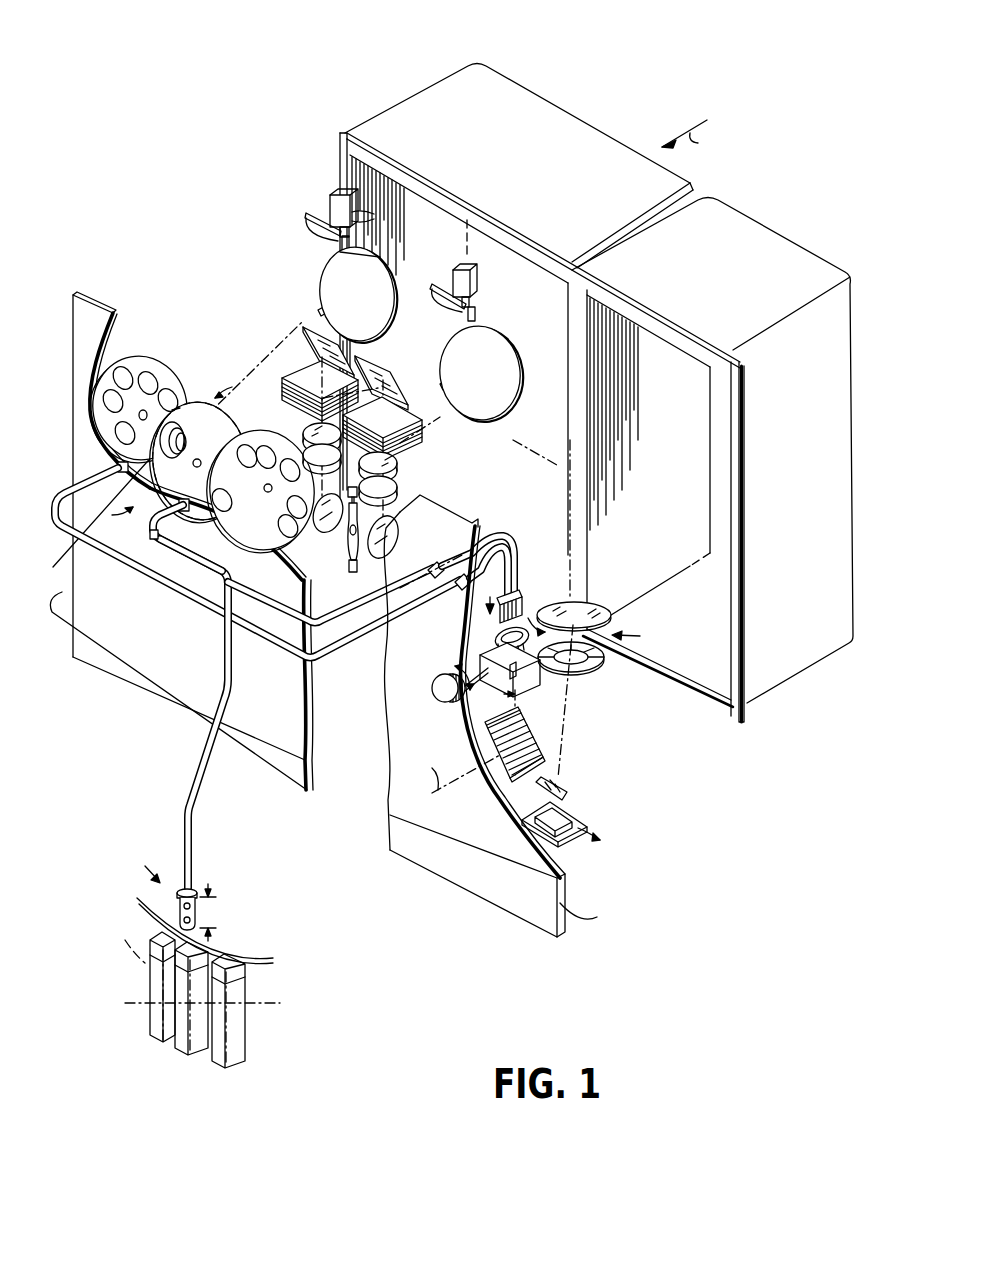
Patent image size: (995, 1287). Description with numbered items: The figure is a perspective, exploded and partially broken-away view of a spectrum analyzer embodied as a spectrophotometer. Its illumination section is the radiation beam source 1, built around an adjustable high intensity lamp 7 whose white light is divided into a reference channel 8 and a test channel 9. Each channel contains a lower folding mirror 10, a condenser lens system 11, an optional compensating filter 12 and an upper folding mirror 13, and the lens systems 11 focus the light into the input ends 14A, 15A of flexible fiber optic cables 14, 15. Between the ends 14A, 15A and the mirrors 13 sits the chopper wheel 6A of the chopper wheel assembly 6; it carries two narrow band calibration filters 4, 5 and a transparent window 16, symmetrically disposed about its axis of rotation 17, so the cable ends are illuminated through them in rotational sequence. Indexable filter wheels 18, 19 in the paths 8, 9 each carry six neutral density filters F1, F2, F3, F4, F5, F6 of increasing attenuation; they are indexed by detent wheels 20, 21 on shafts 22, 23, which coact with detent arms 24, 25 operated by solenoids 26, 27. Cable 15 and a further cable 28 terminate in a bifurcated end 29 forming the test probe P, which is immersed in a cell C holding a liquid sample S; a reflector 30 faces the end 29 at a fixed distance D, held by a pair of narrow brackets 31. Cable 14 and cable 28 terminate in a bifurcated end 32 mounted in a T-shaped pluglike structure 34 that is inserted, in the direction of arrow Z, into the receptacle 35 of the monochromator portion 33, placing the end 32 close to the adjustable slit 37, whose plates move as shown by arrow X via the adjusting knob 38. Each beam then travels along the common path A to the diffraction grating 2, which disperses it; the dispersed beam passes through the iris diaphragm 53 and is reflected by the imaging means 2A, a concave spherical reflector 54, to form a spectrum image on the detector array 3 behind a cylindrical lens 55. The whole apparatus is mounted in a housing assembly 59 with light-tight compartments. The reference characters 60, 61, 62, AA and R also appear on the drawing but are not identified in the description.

The radiation beam source 1 is at (176, 690).
The radiation dispersing means 2 is at (517, 779).
The spectrum imaging means 2A is at (638, 636).
The array of optical detectors 3 is at (573, 815).
The narrow band optical filter 4 is at (153, 460).
The narrow band optical filter 5 is at (243, 440).
The rotatable chopper wheel assembly 6 is at (260, 462).
The chopper wheel 6A is at (167, 453).
The light source 7 is at (349, 558).
The optical path 8 is at (300, 360).
The optical path 9 is at (398, 518).
The lower folding mirror 10 is at (326, 533).
The condenser lens system 11 is at (343, 447).
The compensating filter 12 is at (300, 378).
The upper folding mirror 13 is at (372, 355).
The fiber optic cable 14 is at (137, 567).
The input end 14A is at (117, 468).
The fiber optic cable 15 is at (224, 634).
The input end 15A is at (151, 537).
The transparent window member 16 is at (217, 521).
The axis of rotation 17 is at (200, 531).
The indexable filter wheel 18 is at (100, 396).
The indexable filter wheel 19 is at (203, 560).
The detent wheel 20 is at (387, 280).
The detent wheel 21 is at (505, 343).
The shaft 22 is at (322, 305).
The shaft 23 is at (455, 385).
The detent arm 24 is at (308, 215).
The detent arm 25 is at (442, 302).
The solenoid 26 is at (330, 192).
The solenoid 27 is at (458, 262).
The fiber optic cable 28 is at (328, 622).
The bifurcated end 29 is at (197, 893).
The reflector 30 is at (220, 944).
The brackets 31 is at (181, 910).
The bifurcated cable end 32 is at (495, 638).
The monochromator portion 33 is at (455, 873).
The T-shaped pluglike structure 34 is at (518, 592).
The ring-shaped receptacle structure 35 is at (486, 656).
The slit opening 37 is at (516, 665).
The adjusting knob 38 is at (438, 698).
The adjustable iris diaphragm 53 is at (598, 668).
The concave spherical reflector 54 is at (585, 602).
The cylindrical lens 55 is at (560, 786).
The housing assembly 59 is at (92, 298).
The housing 60 is at (596, 366).
The upper housing part 61 is at (440, 93).
The side housing part 62 is at (750, 222).
The common path A is at (504, 730).
The viewing direction AA is at (690, 140).
The cell C is at (185, 1060).
The fixed distance D is at (214, 912).
The neutral density filter F1 is at (182, 406).
The neutral density filter F2 is at (168, 388).
The neutral density filter F3 is at (147, 371).
The neutral density filter F4 is at (122, 366).
The neutral density filter F5 is at (103, 402).
The neutral density filter F6 is at (114, 434).
The optical test probe P is at (147, 865).
The axis R is at (462, 774).
The sample S is at (196, 978).
The bidirectional arrow X is at (541, 538).
The arrow Z is at (447, 587).